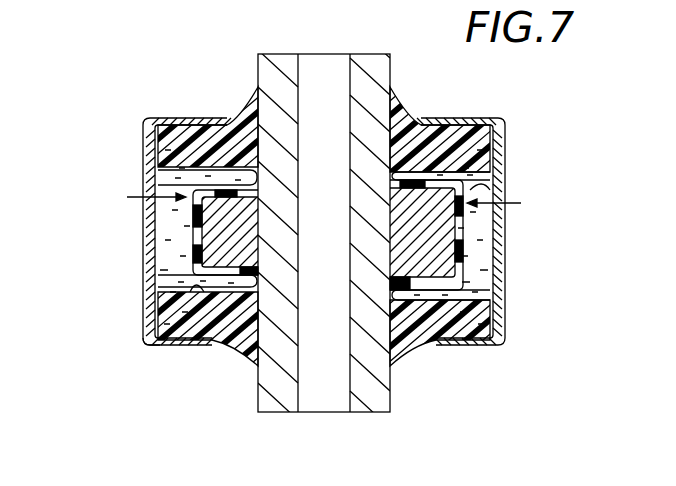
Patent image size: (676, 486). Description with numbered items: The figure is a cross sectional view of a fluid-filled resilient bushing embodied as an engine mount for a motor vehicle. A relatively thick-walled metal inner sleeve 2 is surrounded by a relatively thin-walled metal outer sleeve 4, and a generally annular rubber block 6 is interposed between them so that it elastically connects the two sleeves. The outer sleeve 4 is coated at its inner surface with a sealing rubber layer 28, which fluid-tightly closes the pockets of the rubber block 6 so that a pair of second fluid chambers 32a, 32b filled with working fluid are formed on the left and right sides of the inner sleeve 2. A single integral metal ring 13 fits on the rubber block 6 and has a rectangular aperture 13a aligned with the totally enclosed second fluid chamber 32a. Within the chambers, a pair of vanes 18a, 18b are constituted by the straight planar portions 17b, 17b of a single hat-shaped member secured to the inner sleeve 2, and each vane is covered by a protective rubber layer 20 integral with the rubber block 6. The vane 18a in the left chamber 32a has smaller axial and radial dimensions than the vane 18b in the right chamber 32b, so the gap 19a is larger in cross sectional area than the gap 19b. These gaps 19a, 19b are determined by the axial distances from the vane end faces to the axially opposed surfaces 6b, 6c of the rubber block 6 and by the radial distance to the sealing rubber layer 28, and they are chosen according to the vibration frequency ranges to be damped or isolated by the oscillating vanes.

The inner sleeve 2 is at (369, 64).
The outer sleeve 4 is at (145, 153).
The rubber block 6 is at (452, 142).
The axially opposed surface of the rubber block 6b is at (202, 296).
The axially opposed surface of the rubber block 6c is at (496, 188).
The integral metal ring 13 is at (150, 140).
The rectangular aperture 13a is at (192, 185).
The straight planar portion 17b is at (218, 213).
The vane 18a is at (142, 197).
The vane 18b is at (487, 200).
The gap 19a is at (170, 256).
The gap 19b is at (480, 254).
The protective rubber layer 20 is at (190, 284).
The sealing rubber layer 28 is at (147, 317).
The second fluid chamber 32a is at (165, 235).
The second fluid chamber 32b is at (487, 230).